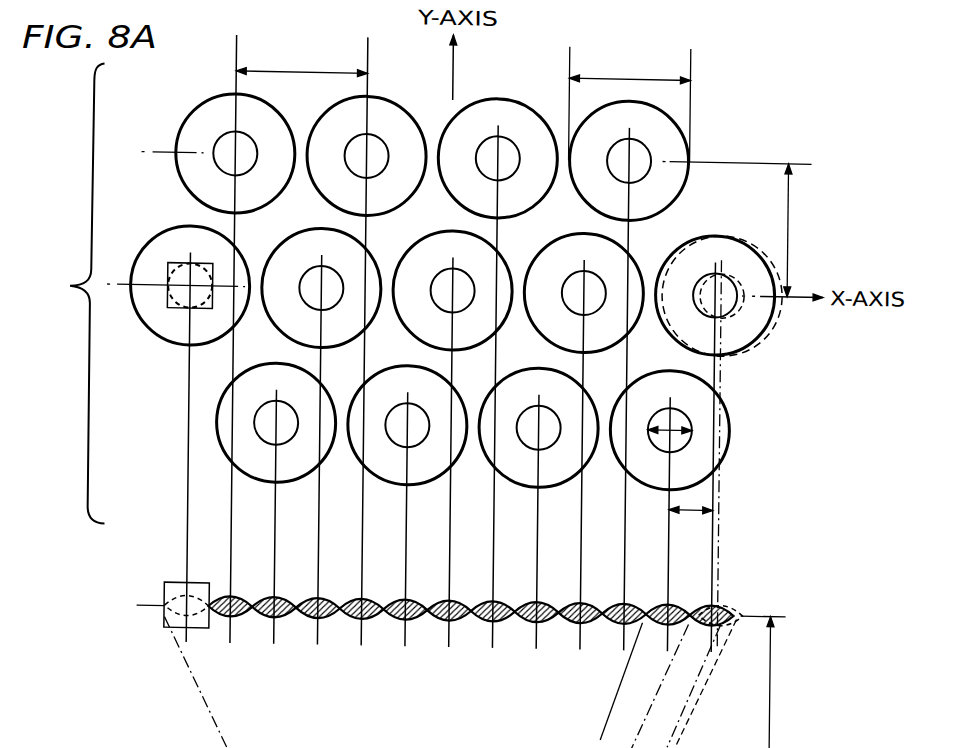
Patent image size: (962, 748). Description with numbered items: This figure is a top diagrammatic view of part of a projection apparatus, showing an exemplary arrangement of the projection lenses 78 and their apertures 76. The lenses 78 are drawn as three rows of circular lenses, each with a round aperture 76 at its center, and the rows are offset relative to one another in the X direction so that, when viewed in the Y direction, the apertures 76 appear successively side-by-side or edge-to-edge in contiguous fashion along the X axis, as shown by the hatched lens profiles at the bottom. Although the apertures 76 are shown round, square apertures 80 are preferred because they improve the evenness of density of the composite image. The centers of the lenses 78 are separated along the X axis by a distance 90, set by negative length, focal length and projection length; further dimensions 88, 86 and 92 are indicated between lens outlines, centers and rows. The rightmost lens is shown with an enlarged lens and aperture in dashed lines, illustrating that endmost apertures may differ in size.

The aperture 76 is at (632, 166).
The projection lens 78 is at (516, 99).
The square aperture 80 is at (168, 312).
The lens pitch offset 86 is at (684, 433).
The lens diameter 88 is at (630, 102).
The distance 90 is at (302, 57).
The row spacing along Y-axis 92 is at (808, 231).